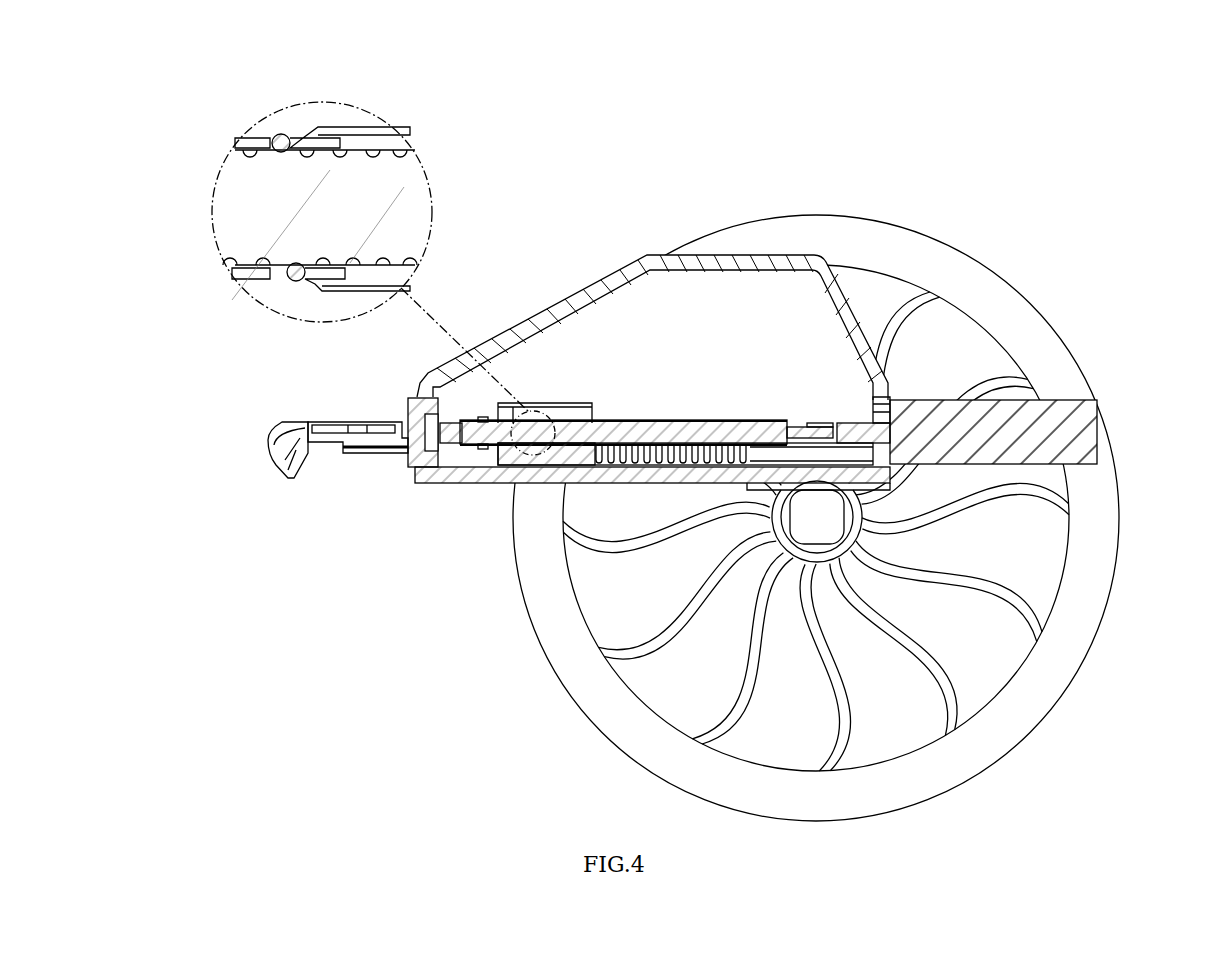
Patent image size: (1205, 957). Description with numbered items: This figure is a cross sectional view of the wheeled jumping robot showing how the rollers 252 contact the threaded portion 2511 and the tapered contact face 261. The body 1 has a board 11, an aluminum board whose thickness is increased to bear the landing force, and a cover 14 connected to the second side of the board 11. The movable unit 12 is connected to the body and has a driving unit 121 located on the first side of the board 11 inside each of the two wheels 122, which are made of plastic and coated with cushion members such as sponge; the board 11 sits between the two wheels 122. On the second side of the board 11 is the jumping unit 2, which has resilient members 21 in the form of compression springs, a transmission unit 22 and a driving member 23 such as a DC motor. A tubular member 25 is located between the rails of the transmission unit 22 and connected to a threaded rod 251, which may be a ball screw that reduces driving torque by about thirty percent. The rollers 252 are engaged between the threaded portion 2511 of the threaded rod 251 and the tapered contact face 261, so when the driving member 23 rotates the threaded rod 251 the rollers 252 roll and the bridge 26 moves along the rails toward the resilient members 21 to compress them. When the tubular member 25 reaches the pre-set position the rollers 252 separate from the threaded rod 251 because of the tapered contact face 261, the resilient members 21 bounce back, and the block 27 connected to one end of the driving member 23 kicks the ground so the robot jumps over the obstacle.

The body 1 is at (1190, 100).
The board 11 is at (430, 472).
The movable unit 12 is at (853, 518).
The driving unit 121 is at (826, 526).
The wheels 122 is at (1092, 614).
The cover 14 is at (668, 256).
The jumping unit 2 is at (712, 400).
The resilient members 21 is at (655, 470).
The transmission unit 22 is at (560, 393).
The driving member 23 is at (1045, 412).
The tubular member 25 is at (679, 360).
The threaded rod 251 is at (800, 427).
The threaded portion 2511 is at (763, 420).
The rollers 252 is at (532, 450).
The bridge 26 is at (582, 400).
The tapered contact face 261 is at (520, 420).
The block 27 is at (293, 455).